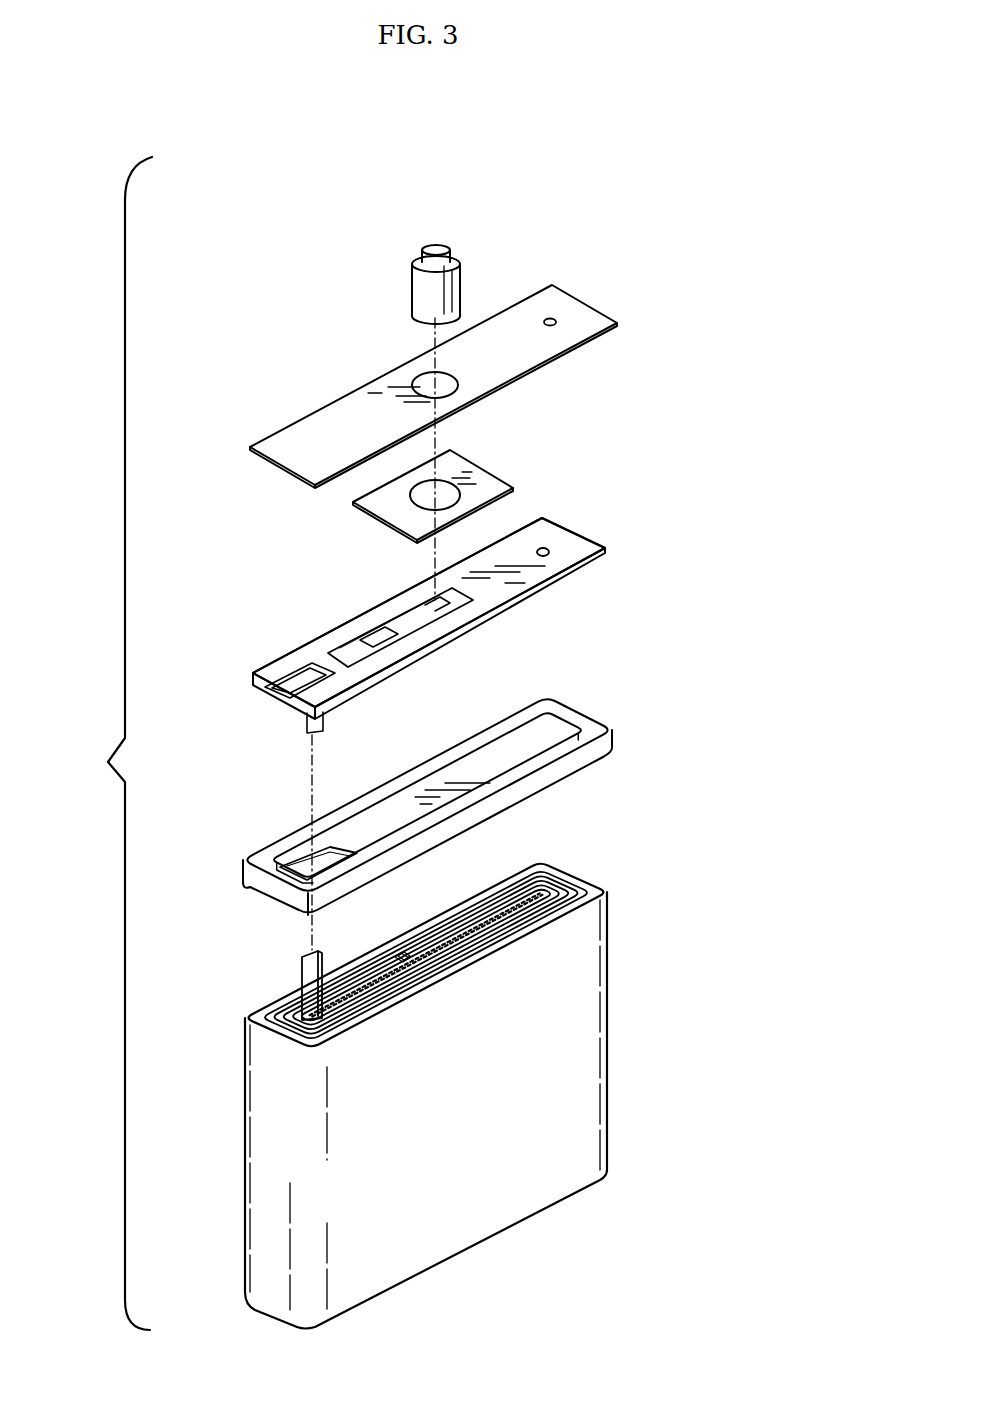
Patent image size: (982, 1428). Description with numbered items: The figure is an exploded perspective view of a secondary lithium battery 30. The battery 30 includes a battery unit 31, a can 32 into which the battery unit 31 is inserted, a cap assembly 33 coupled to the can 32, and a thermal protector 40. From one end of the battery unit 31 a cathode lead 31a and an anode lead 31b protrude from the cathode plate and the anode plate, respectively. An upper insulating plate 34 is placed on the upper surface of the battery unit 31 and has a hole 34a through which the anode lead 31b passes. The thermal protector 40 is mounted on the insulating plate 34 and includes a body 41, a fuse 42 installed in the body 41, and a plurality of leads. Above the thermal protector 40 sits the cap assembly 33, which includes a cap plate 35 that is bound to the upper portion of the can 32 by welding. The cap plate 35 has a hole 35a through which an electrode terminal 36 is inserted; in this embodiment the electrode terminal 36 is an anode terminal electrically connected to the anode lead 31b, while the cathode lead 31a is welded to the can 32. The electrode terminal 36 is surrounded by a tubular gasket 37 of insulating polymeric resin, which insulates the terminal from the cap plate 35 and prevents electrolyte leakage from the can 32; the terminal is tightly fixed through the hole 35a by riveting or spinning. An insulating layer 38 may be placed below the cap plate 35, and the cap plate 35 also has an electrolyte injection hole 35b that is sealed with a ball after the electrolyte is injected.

The secondary lithium battery 30 is at (101, 743).
The battery unit 31 is at (585, 890).
The cathode lead 31a is at (400, 955).
The anode lead 31b is at (297, 968).
The can 32 is at (610, 1033).
The cap assembly 33 is at (598, 163).
The upper insulating plate 34 is at (613, 747).
The hole 34a is at (300, 872).
The cap plate 35 is at (318, 437).
The hole 35a is at (417, 387).
The electrolyte injection hole 35b is at (552, 317).
The electrode terminal 36 is at (438, 249).
The gasket 37 is at (460, 288).
The insulating layer 38 is at (493, 473).
The thermal protector 40 is at (607, 513).
The body 41 is at (567, 573).
The fuse 42 is at (358, 643).